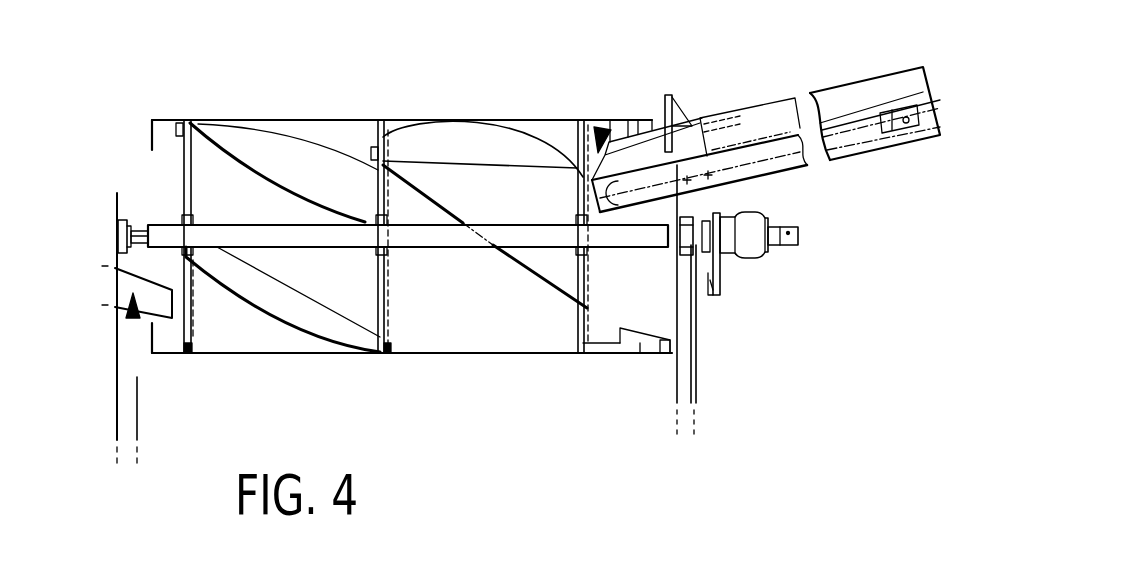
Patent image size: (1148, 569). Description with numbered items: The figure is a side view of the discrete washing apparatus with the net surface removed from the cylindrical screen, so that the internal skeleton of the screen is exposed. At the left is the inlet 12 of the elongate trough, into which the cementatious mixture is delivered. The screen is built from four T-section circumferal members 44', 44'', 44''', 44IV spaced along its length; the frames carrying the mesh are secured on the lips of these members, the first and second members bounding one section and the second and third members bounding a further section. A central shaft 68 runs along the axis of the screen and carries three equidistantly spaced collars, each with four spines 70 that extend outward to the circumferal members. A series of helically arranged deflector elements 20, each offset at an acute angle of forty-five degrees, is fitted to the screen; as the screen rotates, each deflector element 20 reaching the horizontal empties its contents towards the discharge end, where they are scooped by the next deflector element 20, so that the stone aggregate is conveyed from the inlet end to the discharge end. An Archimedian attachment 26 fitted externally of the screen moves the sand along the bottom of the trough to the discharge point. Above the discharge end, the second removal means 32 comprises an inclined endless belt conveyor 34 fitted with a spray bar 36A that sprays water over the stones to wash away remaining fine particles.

The inlet 12 is at (133, 320).
The deflector element 20 is at (232, 147).
The Archimedian attachment 26 is at (604, 126).
The second removal means 32 is at (746, 180).
The inclined endless belt conveyor 34 is at (780, 125).
The spray bar 36A is at (736, 118).
The circumferal member 44' is at (212, 232).
The circumferal member 44'' is at (393, 232).
The circumferal member 44''' is at (576, 232).
The circumferal member 44IV is at (655, 108).
The central shaft 68 is at (472, 243).
The spines 70 is at (180, 165).